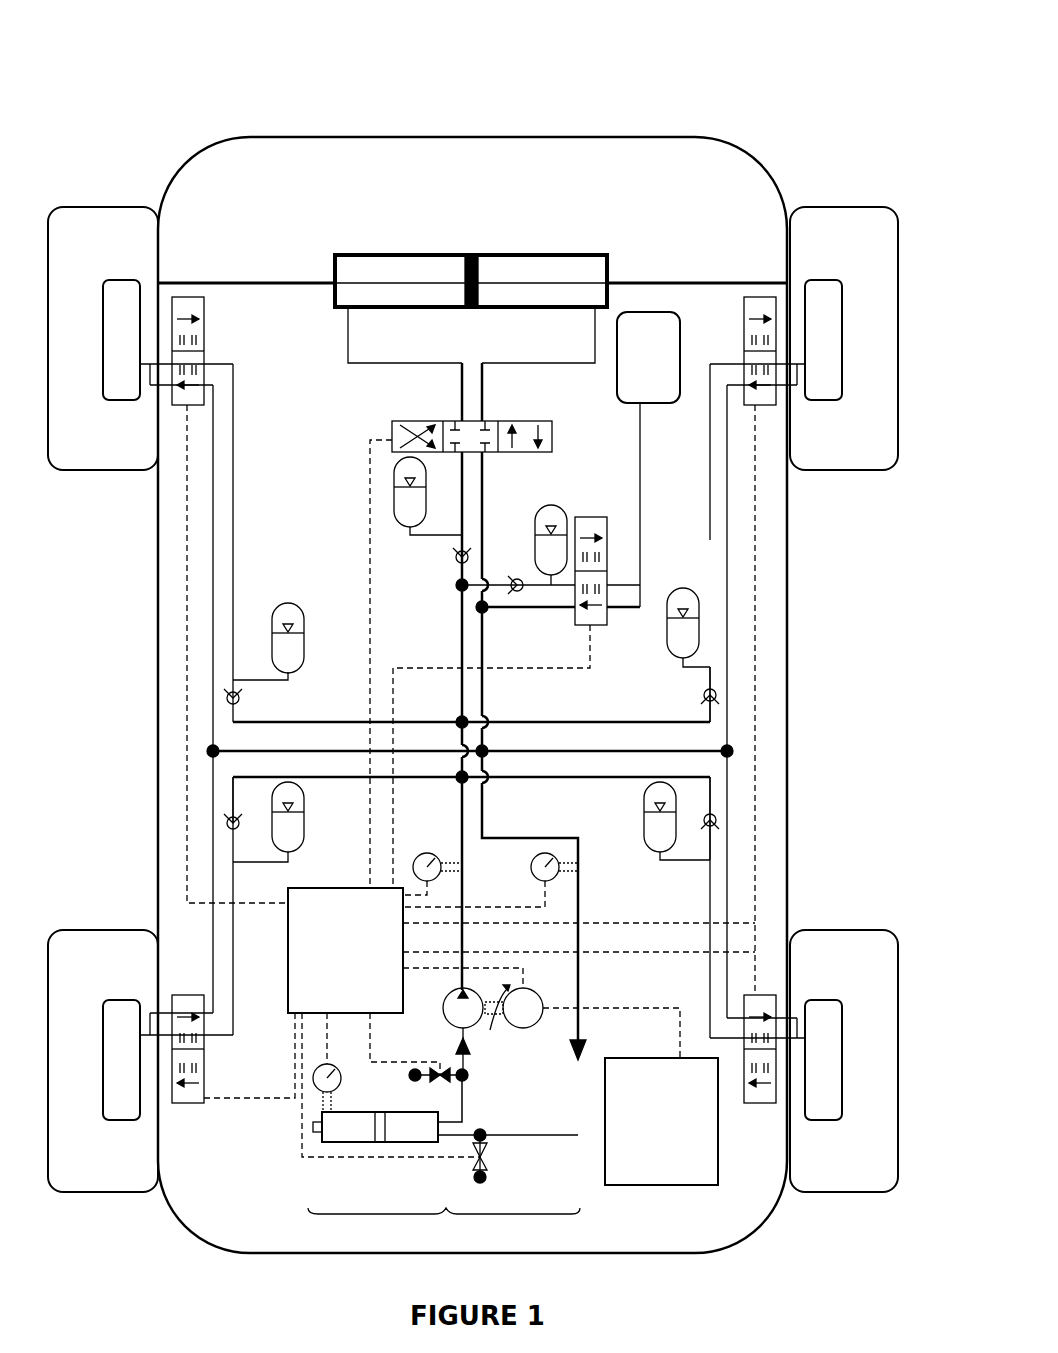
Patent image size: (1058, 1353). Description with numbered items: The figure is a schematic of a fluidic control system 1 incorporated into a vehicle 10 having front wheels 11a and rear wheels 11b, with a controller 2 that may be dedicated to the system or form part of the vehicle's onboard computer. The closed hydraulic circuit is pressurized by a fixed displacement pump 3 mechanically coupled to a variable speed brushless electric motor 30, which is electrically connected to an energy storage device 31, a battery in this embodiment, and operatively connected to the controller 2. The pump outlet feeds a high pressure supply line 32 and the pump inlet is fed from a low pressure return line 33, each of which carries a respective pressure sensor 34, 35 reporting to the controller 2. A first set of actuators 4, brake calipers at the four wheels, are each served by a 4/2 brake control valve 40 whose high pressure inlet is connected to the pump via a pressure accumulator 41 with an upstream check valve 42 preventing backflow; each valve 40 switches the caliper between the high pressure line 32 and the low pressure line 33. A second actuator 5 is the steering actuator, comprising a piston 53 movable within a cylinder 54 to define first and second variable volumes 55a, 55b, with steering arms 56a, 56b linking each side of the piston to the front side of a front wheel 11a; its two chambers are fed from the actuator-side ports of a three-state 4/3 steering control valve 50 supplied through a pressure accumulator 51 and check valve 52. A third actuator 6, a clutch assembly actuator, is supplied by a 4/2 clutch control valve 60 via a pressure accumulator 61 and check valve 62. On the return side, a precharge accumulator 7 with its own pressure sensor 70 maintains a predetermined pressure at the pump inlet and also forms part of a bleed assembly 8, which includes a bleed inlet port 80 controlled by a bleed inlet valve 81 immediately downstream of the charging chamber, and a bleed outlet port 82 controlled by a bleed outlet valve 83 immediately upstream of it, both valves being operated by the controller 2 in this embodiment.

The fluidic control system 1 is at (823, 78).
The vehicle 10 is at (500, 137).
The second actuator 5 is at (620, 212).
The front wheels 11a is at (98, 207).
The rear wheels 11b is at (70, 930).
The first set of actuators 4 is at (103, 343).
The steering arm 56a is at (270, 283).
The steering arm 56b is at (714, 283).
The cylinder 54 is at (607, 262).
The first variable volume 55a is at (375, 265).
The second variable volume 55b is at (562, 265).
The piston 53 is at (470, 258).
The first valve means 40 is at (178, 405).
The second valve means 50 is at (392, 436).
The pressure accumulator 51 is at (408, 530).
The check valve 52 is at (455, 556).
The third actuator 6 is at (648, 459).
The pressure accumulator 61 is at (535, 530).
The check valve 62 is at (520, 580).
The third valve means 60 is at (590, 517).
The high pressure supply line 32 is at (462, 660).
The low pressure return line 33 is at (492, 812).
The check valve 42 is at (245, 690).
The pressure accumulator 41 is at (305, 625).
The pressure sensor 34 is at (425, 853).
The pressure sensor 35 is at (531, 866).
The controller 2 is at (521, 1022).
The fixed displacement pump 3 is at (473, 1015).
The electric motor 30 is at (530, 1015).
The energy storage device 31 is at (661, 1121).
The pressure sensor 70 is at (340, 1068).
The precharge accumulator 7 is at (360, 1142).
The bleed inlet port 80 is at (415, 1080).
The bleed inlet valve 81 is at (452, 1080).
The bleed outlet port 82 is at (484, 1178).
The bleed outlet valve 83 is at (490, 1157).
The bleed assembly 8 is at (444, 1232).